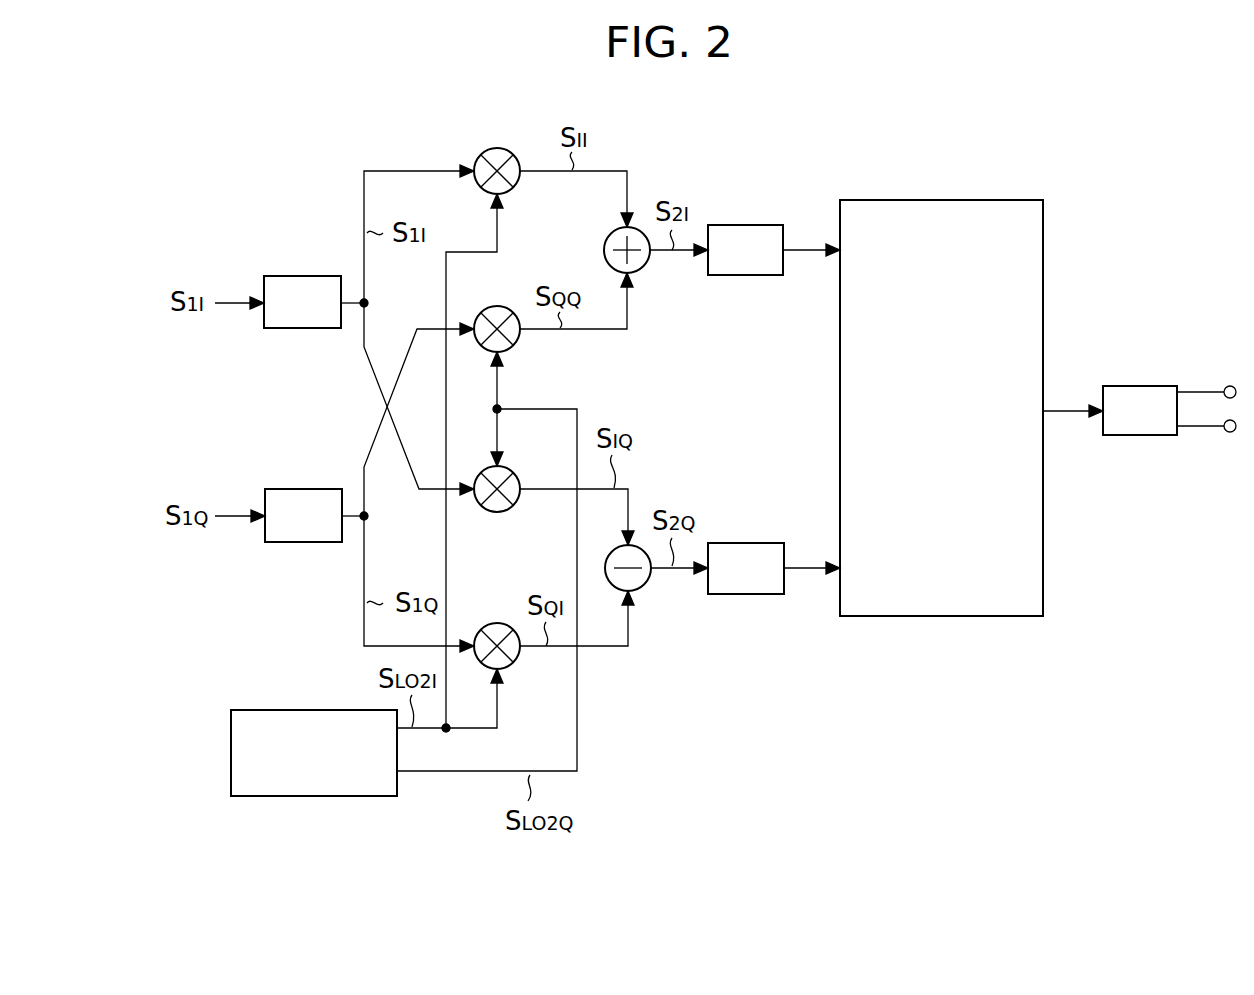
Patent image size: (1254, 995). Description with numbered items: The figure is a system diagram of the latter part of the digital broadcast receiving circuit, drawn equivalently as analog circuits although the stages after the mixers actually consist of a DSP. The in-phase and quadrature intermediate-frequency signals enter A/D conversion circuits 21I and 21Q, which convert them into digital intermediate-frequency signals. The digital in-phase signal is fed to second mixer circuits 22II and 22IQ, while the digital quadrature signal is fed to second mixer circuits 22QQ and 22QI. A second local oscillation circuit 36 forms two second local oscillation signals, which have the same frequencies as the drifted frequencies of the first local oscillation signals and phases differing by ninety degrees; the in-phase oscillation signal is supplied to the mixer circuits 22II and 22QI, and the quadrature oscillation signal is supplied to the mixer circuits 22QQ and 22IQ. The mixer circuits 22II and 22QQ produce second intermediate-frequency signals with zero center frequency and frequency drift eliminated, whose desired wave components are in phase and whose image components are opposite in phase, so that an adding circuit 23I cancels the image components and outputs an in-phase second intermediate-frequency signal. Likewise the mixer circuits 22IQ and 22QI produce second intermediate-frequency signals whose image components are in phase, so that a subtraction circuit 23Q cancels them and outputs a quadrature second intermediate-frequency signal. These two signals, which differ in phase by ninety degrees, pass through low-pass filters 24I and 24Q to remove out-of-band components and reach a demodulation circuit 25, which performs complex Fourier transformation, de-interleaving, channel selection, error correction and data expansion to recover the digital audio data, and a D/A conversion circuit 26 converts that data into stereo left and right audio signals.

The A/D conversion circuit 21I is at (293, 330).
The A/D conversion circuit 21Q is at (292, 543).
The second mixer circuit 22II is at (497, 148).
The second mixer circuit 22QQ is at (515, 344).
The second mixer circuit 22IQ is at (503, 511).
The second mixer circuit 22QI is at (515, 664).
The adding circuit 23I is at (645, 268).
The subtraction circuit 23Q is at (645, 586).
The low-pass filter 24I is at (756, 225).
The low-pass filter 24Q is at (768, 543).
The demodulation circuit 25 is at (977, 616).
The D/A conversion circuit 26 is at (1150, 386).
The second local oscillation circuit 36 is at (262, 710).